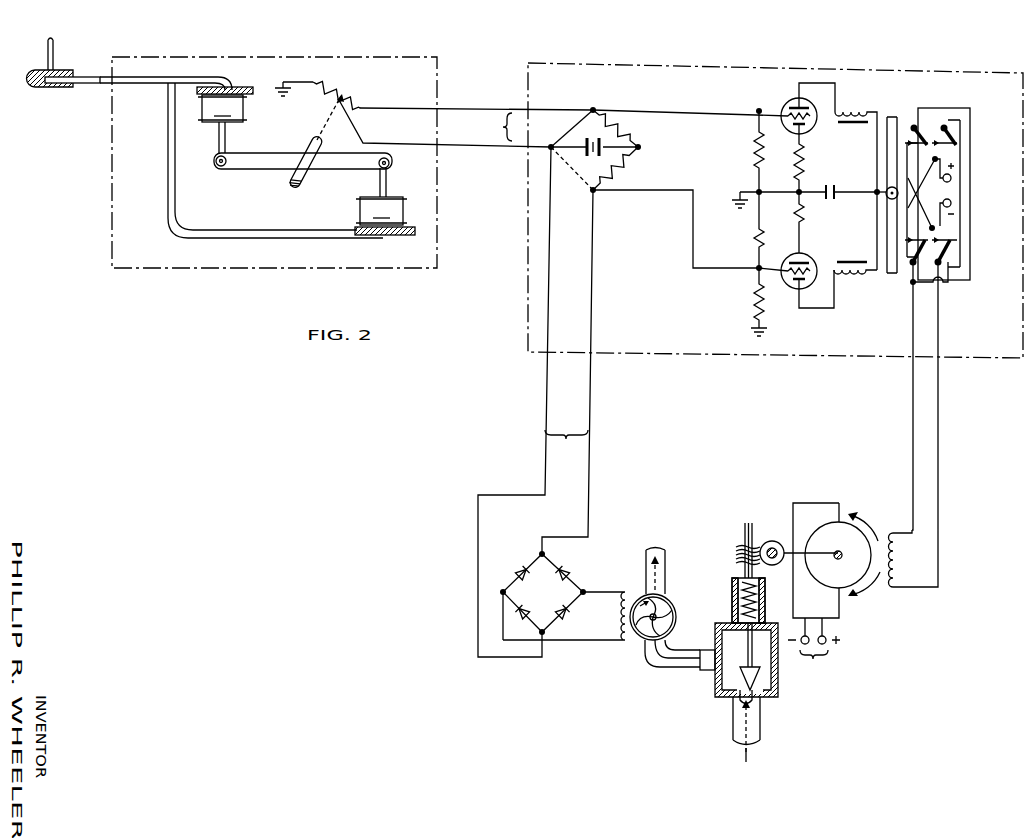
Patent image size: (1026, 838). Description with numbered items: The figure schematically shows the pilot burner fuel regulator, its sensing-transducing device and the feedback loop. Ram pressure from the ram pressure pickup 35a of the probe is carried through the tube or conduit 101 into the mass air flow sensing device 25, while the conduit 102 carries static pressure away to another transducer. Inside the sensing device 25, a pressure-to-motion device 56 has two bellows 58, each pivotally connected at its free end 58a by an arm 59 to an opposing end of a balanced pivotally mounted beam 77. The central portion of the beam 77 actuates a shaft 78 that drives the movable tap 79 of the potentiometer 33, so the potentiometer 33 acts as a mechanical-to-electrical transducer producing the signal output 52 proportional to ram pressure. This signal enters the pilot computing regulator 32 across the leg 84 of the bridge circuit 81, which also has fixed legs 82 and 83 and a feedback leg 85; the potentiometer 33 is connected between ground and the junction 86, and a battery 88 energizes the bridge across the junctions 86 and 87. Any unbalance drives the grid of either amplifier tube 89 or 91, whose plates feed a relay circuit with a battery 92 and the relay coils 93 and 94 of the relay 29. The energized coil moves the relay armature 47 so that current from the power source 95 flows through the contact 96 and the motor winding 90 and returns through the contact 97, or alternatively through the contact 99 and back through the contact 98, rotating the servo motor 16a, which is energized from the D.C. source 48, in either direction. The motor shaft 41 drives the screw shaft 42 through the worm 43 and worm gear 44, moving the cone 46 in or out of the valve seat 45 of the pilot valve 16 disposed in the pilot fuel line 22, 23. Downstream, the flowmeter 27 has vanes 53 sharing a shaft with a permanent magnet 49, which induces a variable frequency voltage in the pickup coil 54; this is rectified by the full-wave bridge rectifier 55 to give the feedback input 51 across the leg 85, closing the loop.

The conduit 102 is at (48, 44).
The ram pressure pickup 35a is at (53, 88).
The tube or conduit 101 is at (174, 80).
The mass air flow sensing device 25 is at (436, 62).
The bellows 58 is at (311, 161).
The free end of bellows 58a is at (202, 123).
The arm 59 is at (218, 141).
The balanced pivotally mounted beam 77 is at (258, 154).
The shaft 78 is at (315, 148).
The movable tap 79 is at (346, 110).
The potentiometer 33 is at (350, 93).
The pressure to mechanical motion device 56 is at (270, 174).
The signal output 52 is at (492, 127).
The pilot computing regulator 32 is at (926, 73).
The bridge circuit 81 is at (589, 143).
The battery 88 is at (592, 132).
The bridge leg 84 is at (575, 126).
The fixed leg 83 is at (622, 129).
The bridge junction 87 is at (641, 147).
The bridge junction 86 is at (551, 148).
The bridge leg 85 is at (578, 184).
The fixed leg 82 is at (624, 174).
The amplifier tube 89 is at (792, 100).
The relay coil 93 is at (851, 108).
The battery 92 is at (834, 186).
The amplifier tube 91 is at (792, 288).
The relay coil 94 is at (850, 277).
The relay armature 47 is at (890, 278).
The switch contact 97 is at (913, 126).
The relay 29 is at (952, 190).
The switch contact 96 is at (957, 140).
The power source 95 is at (951, 202).
The switch contact 99 is at (916, 265).
The switch contact 98 is at (942, 270).
The feedback input signal 51 is at (566, 444).
The full-wave bridge rectifier 55 is at (515, 568).
The pickup coil 54 is at (620, 628).
The permanent magnet 49 is at (655, 641).
The pilot fuel line 23 is at (666, 553).
The flowmeter 27 is at (670, 597).
The vanes 53 is at (672, 596).
The screw shaft 42 is at (732, 590).
The worm gear 44 is at (738, 550).
The worm 43 is at (772, 541).
The motor shaft 41 is at (802, 540).
The servo motor 16a is at (858, 585).
The motor winding 90 is at (897, 564).
The D.C. source 48 is at (814, 648).
The cone 46 is at (734, 672).
The valve seat 45 is at (734, 696).
The pilot valve 16 is at (782, 727).
The pilot fuel line 22 is at (762, 722).